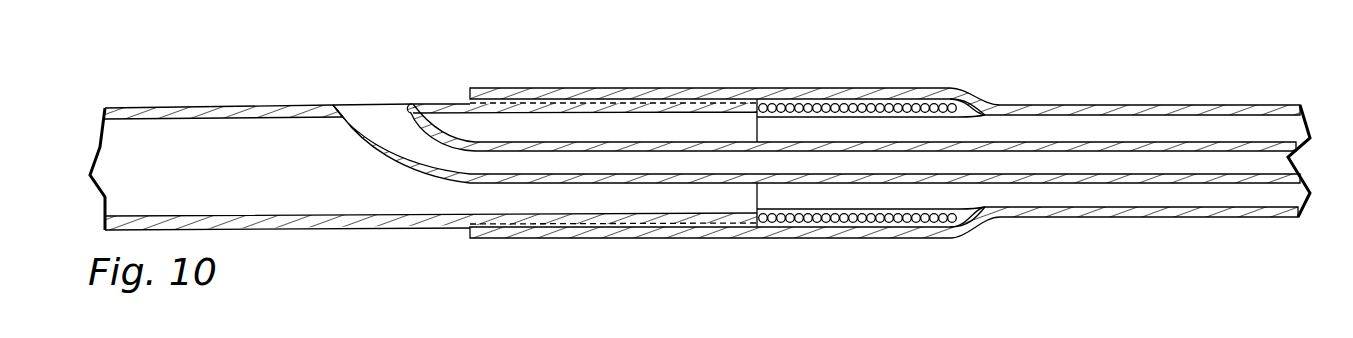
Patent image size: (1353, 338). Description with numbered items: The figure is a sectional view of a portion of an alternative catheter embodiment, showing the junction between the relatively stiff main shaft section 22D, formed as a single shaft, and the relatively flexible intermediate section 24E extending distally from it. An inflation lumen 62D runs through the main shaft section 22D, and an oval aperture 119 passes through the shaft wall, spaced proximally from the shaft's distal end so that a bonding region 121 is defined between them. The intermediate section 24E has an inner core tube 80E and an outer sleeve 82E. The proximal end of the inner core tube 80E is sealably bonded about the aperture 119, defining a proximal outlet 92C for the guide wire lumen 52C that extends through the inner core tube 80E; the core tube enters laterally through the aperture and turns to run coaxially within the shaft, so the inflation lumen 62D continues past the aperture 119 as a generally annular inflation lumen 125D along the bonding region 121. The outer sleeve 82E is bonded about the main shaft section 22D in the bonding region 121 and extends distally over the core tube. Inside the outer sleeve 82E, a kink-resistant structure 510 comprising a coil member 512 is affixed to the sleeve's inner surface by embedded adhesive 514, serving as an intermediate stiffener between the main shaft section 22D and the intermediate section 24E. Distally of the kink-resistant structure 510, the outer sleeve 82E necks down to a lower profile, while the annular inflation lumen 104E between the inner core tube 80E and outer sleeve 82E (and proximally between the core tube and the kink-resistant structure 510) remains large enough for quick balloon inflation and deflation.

The inflation lumen 62D is at (278, 175).
The proximal outlet 92C is at (364, 116).
The aperture 119 is at (384, 105).
The bonding region 121 is at (591, 113).
The guide wire lumen 52C is at (816, 144).
The inner core tube 80E is at (1185, 146).
The inflation lumen 125D is at (593, 197).
The main shaft section 22D is at (348, 238).
The intermediate section 24E is at (1114, 90).
The outer sleeve 82E is at (1228, 112).
The kink-resistant structure 510 is at (821, 96).
The coil member 512 is at (858, 94).
The embedded adhesive 514 is at (972, 105).
The annular inflation lumen 104E is at (1037, 193).